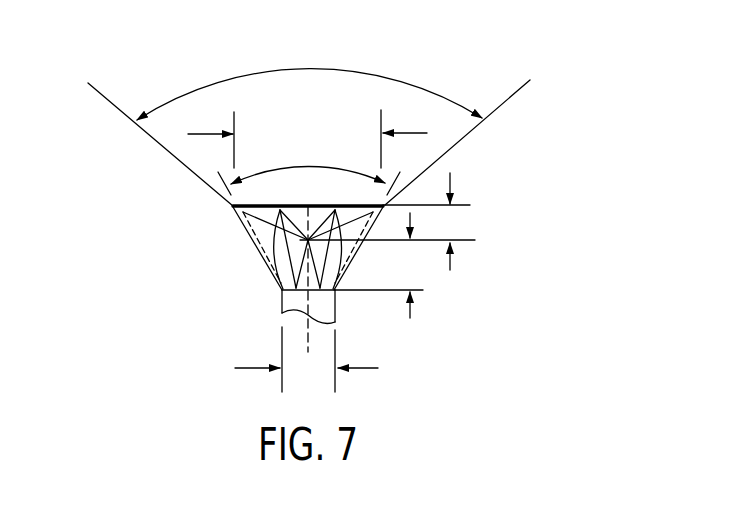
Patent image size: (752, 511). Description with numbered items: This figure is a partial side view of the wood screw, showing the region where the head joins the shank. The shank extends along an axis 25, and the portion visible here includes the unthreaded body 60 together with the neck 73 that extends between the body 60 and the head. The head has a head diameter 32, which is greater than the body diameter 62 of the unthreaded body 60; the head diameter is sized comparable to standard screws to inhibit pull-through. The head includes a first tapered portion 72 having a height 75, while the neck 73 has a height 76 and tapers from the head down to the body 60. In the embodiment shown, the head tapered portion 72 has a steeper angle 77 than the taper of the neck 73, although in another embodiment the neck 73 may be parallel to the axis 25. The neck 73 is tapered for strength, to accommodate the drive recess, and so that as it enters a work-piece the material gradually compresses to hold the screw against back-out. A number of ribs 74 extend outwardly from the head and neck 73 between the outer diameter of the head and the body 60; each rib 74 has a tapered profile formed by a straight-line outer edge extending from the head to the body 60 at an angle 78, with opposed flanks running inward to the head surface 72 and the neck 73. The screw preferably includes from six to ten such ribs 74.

The angle 77 is at (312, 63).
The angle 78 is at (313, 165).
The head diameter 32 is at (212, 133).
The height 75 is at (450, 182).
The height 76 is at (412, 310).
The first tapered portion 72 is at (262, 220).
The ribs 74 is at (272, 245).
The neck 73 is at (280, 277).
The unthreaded body 60 is at (292, 303).
The axis 25 is at (307, 340).
The body diameter 62 is at (368, 370).